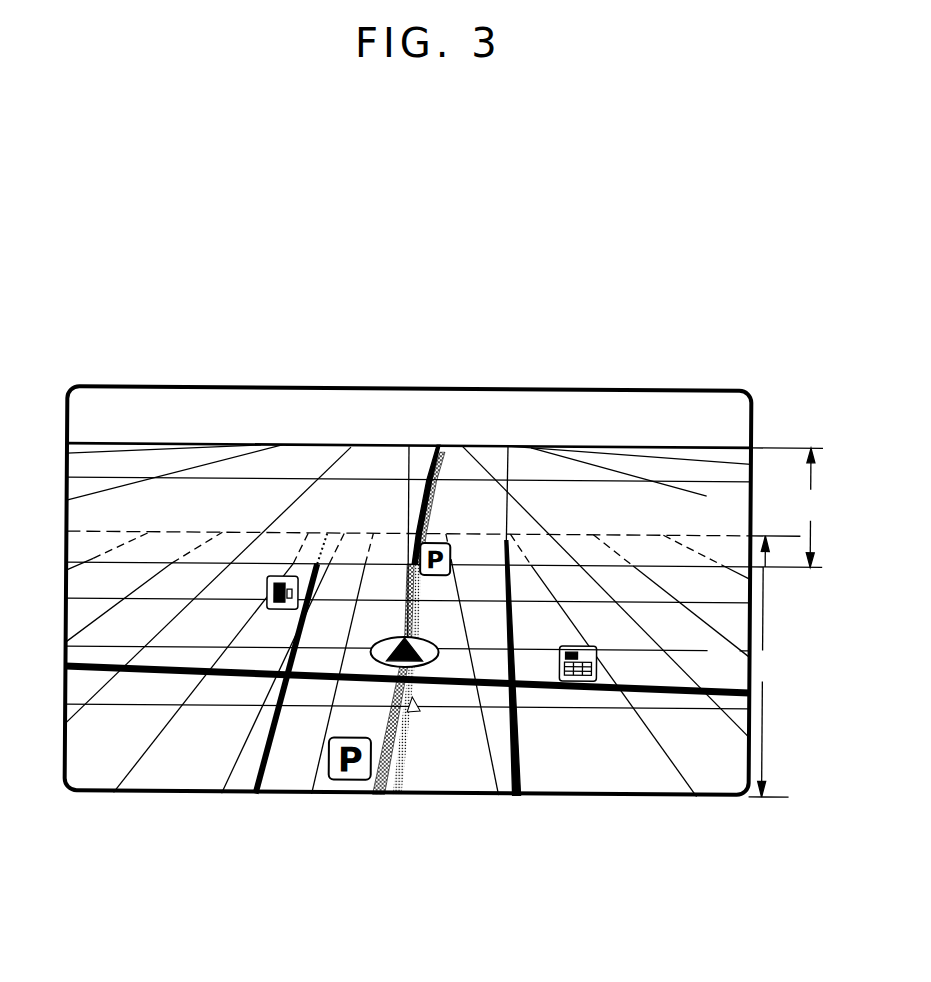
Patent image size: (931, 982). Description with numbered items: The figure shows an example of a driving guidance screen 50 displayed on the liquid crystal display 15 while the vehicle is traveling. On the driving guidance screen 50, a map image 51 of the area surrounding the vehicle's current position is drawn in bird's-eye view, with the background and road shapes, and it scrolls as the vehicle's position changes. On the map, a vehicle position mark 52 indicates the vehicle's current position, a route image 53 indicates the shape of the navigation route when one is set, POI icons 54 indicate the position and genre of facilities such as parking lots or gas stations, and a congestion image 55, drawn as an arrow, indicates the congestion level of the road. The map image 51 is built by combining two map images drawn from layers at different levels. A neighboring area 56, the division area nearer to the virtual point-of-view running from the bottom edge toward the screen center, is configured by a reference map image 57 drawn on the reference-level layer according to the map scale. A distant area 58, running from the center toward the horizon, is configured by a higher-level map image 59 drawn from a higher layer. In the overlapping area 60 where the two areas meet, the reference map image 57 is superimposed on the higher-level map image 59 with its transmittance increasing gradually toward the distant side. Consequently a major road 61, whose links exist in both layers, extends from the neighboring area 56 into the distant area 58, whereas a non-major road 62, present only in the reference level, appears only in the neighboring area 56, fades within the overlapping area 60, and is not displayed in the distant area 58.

The liquid crystal display 15 is at (668, 389).
The driving guidance screen 50 is at (619, 413).
The map image 51 is at (194, 791).
The vehicle position mark 52 is at (372, 646).
The route image 53 is at (409, 572).
The POI icon 54 is at (268, 597).
The congestion image 55 is at (414, 740).
The neighboring area 56 is at (788, 678).
The reference map image 57 is at (740, 670).
The distant area 58 is at (830, 517).
The higher-level map image 59 is at (750, 502).
The overlapping area 60 is at (803, 562).
The road 61 is at (522, 738).
The road 62 is at (268, 741).